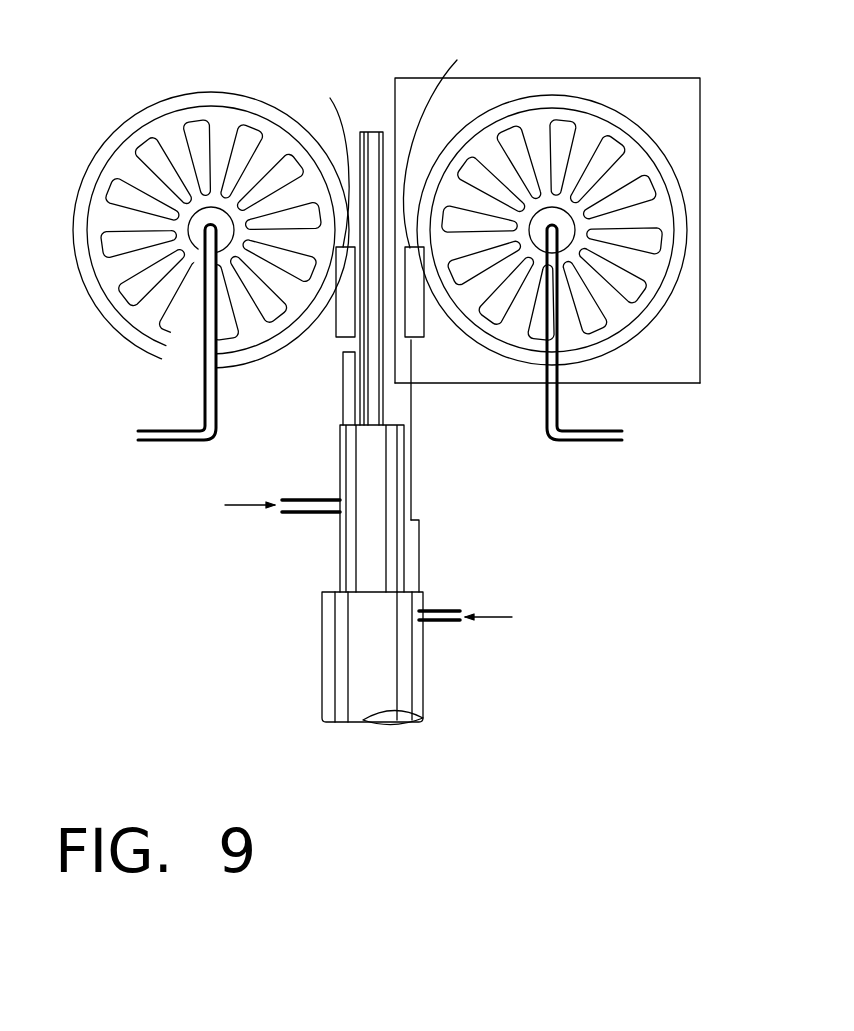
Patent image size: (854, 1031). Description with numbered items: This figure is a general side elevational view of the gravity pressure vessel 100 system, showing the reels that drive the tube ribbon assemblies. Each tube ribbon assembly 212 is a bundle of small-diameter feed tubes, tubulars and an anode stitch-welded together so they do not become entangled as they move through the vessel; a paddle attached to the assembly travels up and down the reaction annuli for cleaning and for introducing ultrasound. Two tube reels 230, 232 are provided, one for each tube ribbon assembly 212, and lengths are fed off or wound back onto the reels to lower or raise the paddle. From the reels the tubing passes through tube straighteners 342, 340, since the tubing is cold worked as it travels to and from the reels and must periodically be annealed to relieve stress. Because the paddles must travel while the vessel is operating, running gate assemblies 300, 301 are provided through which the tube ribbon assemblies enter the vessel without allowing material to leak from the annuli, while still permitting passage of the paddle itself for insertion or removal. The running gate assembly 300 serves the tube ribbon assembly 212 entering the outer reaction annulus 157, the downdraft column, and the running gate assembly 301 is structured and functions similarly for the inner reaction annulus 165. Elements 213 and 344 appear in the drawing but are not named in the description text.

The gravity pressure vessel 100 is at (344, 428).
The outer reaction annulus 157 is at (331, 590).
The inner reaction annulus 165 is at (403, 425).
The tube ribbon assembly 212 is at (413, 473).
The first filament 213 is at (325, 153).
The tube reel 230 is at (132, 118).
The tube reel 232 is at (640, 128).
The running gate assembly 300 is at (420, 557).
The running gate assembly 301 is at (340, 407).
The tube straightener 340 is at (454, 135).
The tube straightener 342 is at (337, 327).
The enclosure base 344 is at (650, 384).